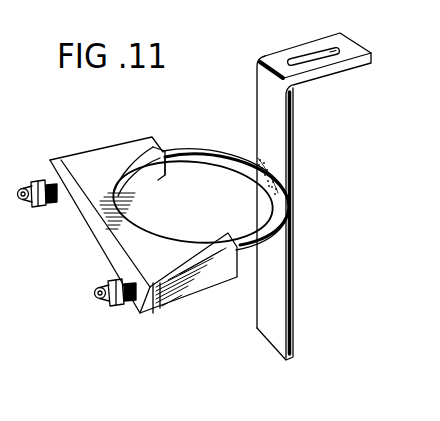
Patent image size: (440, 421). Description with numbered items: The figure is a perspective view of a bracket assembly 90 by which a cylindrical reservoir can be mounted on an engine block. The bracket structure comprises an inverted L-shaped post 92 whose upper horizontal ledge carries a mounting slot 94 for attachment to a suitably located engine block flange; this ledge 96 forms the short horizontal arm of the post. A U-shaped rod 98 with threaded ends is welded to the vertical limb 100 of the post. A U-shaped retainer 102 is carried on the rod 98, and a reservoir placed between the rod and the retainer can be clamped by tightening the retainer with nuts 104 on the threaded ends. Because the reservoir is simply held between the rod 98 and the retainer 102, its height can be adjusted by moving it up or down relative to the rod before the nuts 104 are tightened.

The bracket assembly 90 is at (302, 308).
The inverted L-shaped post 92 is at (295, 162).
The mounting slot 94 is at (305, 57).
The flange 96 is at (357, 70).
The U-shaped rod 98 is at (200, 152).
The vertical limb 100 is at (283, 262).
The U-shaped retainer 102 is at (110, 222).
The nuts 104 is at (36, 182).